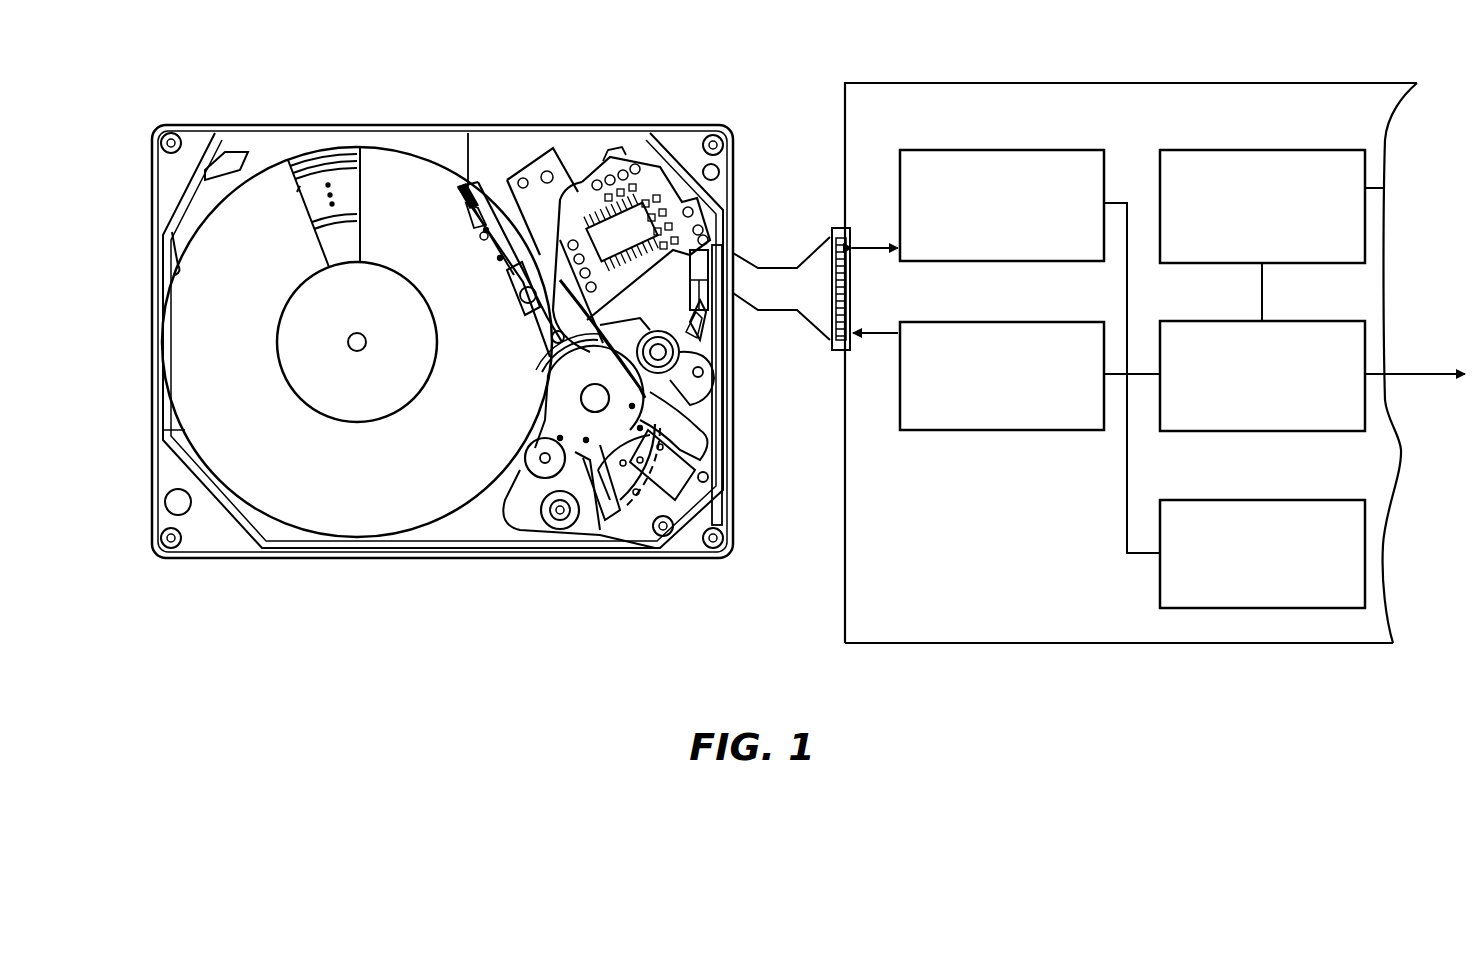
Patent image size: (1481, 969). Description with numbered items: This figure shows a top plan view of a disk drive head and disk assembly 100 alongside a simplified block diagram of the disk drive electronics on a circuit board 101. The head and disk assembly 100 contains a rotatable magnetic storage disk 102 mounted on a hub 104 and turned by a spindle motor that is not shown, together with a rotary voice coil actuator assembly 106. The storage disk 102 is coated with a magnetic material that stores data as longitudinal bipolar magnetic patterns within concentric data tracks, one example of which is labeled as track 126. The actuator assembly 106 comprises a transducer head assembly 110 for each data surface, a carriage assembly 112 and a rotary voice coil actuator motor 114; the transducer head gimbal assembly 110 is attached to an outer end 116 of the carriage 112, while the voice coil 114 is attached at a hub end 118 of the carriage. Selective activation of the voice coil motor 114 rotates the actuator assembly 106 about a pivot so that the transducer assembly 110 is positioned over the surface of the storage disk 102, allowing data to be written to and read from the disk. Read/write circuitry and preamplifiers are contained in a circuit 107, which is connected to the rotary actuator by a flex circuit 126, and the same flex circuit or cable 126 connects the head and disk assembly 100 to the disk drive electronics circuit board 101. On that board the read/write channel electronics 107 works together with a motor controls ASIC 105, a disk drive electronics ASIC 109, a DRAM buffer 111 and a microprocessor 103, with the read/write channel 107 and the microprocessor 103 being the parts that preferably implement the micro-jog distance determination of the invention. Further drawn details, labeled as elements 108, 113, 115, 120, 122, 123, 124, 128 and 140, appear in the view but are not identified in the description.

The head and disk assembly 100 is at (665, 598).
The circuit board 101 is at (1035, 644).
The rotatable magnetic storage disk 102 is at (330, 520).
The microprocessor 103 is at (1365, 525).
The hub 104 is at (383, 407).
The motor controls ASIC 105 is at (955, 322).
The rotary voice coil actuator assembly 106 is at (552, 425).
The read/write channel electronics 107 is at (583, 163).
The base housing 108 is at (218, 545).
The disk drive electronics ASIC 109 is at (706, 333).
The transducer head assembly 110 is at (468, 240).
The DRAM buffer 111 is at (1384, 188).
The carriage assembly 112 is at (545, 370).
The bus 113 is at (1127, 500).
The rotary voice coil actuator motor 114 is at (703, 438).
The host interface 115 is at (1422, 372).
The outer end 116 is at (509, 292).
The hub end 118 is at (588, 522).
The pivot 120 is at (588, 397).
The slider 122 is at (470, 230).
The transducer 123 is at (466, 196).
The suspension 124 is at (500, 274).
The flex circuit 126 is at (303, 190).
The servo sector 128 is at (334, 250).
The drive frame 140 is at (747, 198).